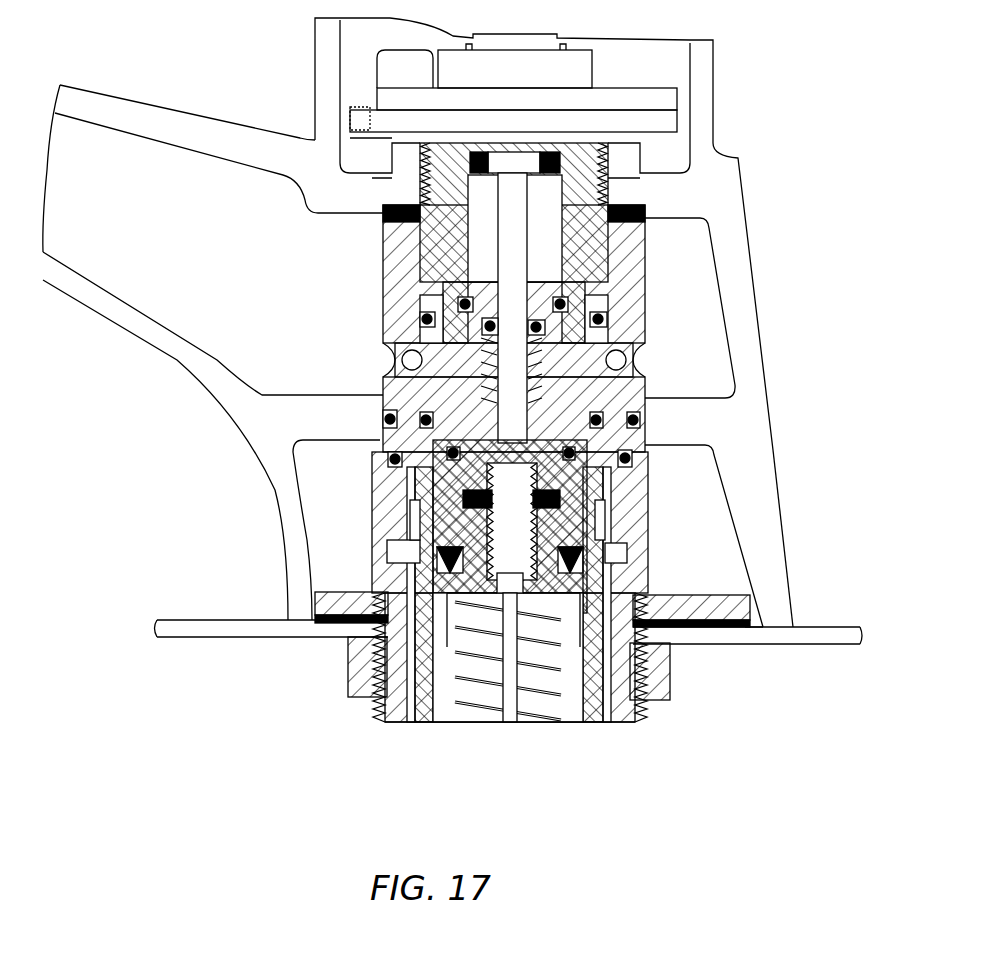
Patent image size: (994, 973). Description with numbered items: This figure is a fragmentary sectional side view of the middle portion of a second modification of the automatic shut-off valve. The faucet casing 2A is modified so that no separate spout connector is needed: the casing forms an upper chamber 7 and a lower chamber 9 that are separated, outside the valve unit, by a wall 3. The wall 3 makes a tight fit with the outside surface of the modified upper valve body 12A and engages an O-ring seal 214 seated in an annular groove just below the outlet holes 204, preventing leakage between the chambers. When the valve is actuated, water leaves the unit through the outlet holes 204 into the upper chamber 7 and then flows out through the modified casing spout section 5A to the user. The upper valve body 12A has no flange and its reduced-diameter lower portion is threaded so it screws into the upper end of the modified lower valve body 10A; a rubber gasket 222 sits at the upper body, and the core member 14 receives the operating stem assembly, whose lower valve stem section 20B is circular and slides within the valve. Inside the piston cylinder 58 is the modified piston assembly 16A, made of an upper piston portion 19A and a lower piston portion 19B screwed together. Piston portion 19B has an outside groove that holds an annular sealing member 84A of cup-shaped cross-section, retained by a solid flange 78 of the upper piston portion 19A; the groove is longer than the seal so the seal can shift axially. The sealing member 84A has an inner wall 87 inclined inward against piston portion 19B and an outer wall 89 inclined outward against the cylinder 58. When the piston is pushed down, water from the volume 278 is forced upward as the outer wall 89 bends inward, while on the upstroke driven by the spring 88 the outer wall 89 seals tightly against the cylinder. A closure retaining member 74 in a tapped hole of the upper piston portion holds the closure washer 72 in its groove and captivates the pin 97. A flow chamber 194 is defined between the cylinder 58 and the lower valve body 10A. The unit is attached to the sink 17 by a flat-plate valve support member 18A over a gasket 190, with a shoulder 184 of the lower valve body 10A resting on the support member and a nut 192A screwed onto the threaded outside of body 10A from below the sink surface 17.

The faucet casing 2A is at (278, 537).
The wall 3 is at (315, 405).
The casing spout section 5A is at (115, 108).
The upper chamber 7 is at (710, 283).
The lower chamber 9 is at (737, 550).
The lower valve body 10A is at (372, 530).
The upper valve body 12A is at (380, 273).
The core member 14 is at (588, 263).
The lavatory sink surface 17 is at (837, 632).
The valve support member 18A is at (730, 595).
The upper piston portion 19A is at (556, 700).
The piston portion 19B is at (348, 688).
The lower valve stem section 20B is at (520, 212).
The piston cylinder 58 is at (600, 655).
The closure washer 72 is at (430, 495).
The closure retaining member 74 is at (590, 505).
The solid flange 78 is at (430, 517).
The annular sealing member 84A is at (440, 567).
The inner wall 87 is at (620, 530).
The spring 88 is at (473, 708).
The outer wall 89 is at (620, 538).
The pin 97 is at (508, 708).
The shoulder 184 is at (315, 597).
The gasket 190 is at (760, 630).
The nut 192A is at (347, 648).
The flow chamber 194 is at (413, 723).
The outlet holes 204 is at (625, 360).
The O-ring seal 214 is at (647, 422).
The rubber gasket 222 is at (643, 208).
The volume 278 is at (553, 715).
The piston assembly 16A is at (443, 648).